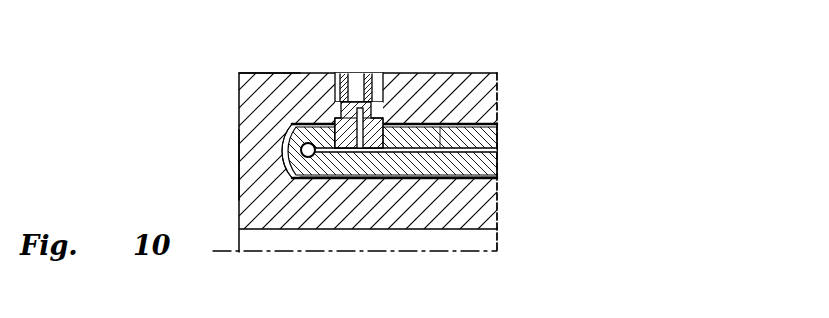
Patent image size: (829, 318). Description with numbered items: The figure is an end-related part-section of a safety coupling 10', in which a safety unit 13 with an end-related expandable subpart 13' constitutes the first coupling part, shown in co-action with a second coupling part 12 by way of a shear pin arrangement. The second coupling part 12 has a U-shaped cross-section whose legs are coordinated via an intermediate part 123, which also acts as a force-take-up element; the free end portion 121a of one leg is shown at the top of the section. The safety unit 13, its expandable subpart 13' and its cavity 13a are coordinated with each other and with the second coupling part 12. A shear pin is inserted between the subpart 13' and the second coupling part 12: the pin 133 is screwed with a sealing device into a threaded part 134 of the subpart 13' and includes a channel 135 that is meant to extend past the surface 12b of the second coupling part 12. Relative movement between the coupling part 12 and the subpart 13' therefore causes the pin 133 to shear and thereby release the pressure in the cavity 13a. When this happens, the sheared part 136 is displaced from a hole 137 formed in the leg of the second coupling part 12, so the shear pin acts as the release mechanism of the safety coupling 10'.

The safety coupling 10' is at (524, 149).
The second coupling part 12 is at (480, 102).
The surface 12b is at (310, 123).
The free end portion 121a is at (247, 61).
The intermediate part 123 is at (258, 148).
The safety unit 13 is at (400, 151).
The expandable subpart 13' is at (372, 154).
The cavity 13a is at (452, 178).
The pin 133 is at (375, 82).
The threaded part 134 is at (292, 138).
The channel 135 is at (386, 165).
The sheared part 136 is at (386, 108).
The hole 137 is at (353, 100).